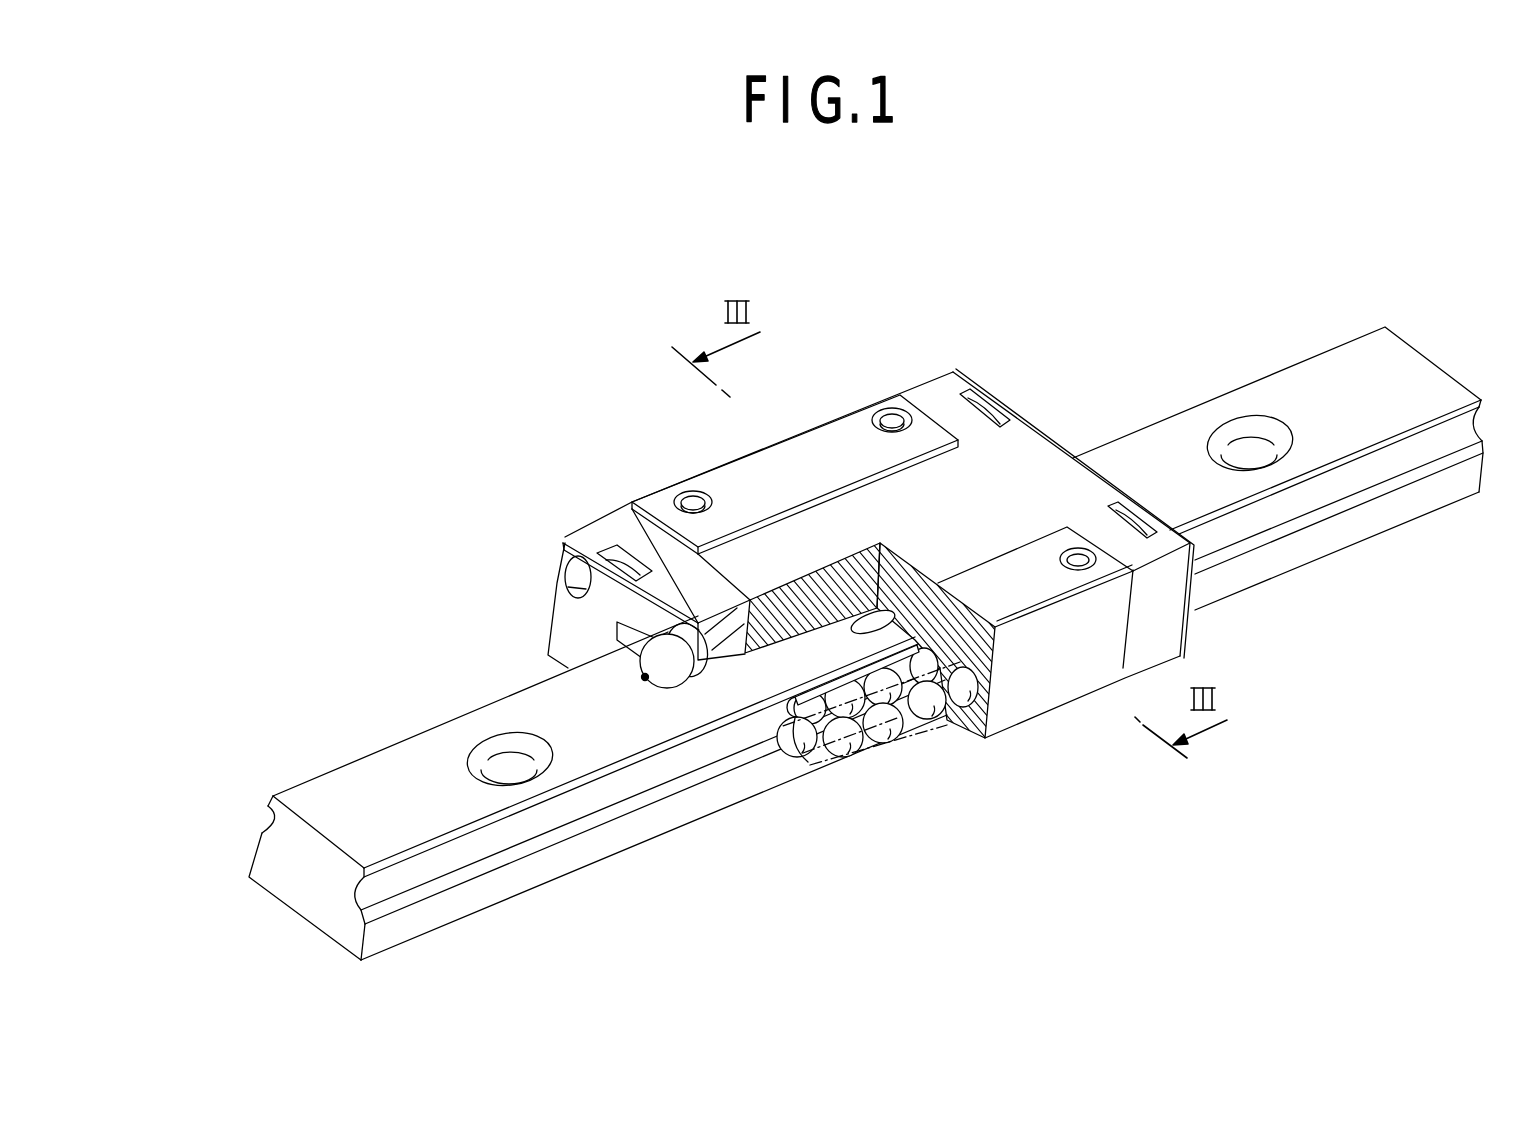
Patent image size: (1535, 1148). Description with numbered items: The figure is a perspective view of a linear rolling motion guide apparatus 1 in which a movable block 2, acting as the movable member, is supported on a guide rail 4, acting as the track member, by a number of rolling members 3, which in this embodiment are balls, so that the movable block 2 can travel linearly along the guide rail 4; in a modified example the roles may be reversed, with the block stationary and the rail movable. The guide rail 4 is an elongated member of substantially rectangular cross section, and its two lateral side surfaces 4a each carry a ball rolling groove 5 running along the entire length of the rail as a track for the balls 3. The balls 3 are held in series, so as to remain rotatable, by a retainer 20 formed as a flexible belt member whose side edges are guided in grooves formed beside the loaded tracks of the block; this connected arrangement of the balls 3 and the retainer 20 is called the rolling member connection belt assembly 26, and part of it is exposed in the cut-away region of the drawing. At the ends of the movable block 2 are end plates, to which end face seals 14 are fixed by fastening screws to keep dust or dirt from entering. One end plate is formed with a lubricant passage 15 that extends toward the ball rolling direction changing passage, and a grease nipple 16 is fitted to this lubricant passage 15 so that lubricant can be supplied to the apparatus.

The linear rolling motion guide apparatus 1 is at (890, 325).
The movable block 2 is at (826, 612).
The rolling members 3 is at (883, 733).
The guide rail 4 is at (825, 647).
The side surfaces of the guide rail 4a is at (252, 838).
The ball rolling grooves 5 is at (262, 803).
The end face seals 14 is at (565, 623).
The lubricant passage 15 is at (622, 508).
The grease nipple 16 is at (663, 670).
The retainer 20 is at (918, 738).
The rolling member connection belt assembly 26 is at (857, 772).